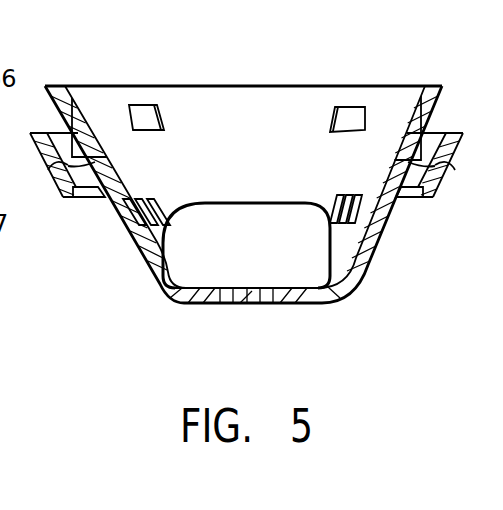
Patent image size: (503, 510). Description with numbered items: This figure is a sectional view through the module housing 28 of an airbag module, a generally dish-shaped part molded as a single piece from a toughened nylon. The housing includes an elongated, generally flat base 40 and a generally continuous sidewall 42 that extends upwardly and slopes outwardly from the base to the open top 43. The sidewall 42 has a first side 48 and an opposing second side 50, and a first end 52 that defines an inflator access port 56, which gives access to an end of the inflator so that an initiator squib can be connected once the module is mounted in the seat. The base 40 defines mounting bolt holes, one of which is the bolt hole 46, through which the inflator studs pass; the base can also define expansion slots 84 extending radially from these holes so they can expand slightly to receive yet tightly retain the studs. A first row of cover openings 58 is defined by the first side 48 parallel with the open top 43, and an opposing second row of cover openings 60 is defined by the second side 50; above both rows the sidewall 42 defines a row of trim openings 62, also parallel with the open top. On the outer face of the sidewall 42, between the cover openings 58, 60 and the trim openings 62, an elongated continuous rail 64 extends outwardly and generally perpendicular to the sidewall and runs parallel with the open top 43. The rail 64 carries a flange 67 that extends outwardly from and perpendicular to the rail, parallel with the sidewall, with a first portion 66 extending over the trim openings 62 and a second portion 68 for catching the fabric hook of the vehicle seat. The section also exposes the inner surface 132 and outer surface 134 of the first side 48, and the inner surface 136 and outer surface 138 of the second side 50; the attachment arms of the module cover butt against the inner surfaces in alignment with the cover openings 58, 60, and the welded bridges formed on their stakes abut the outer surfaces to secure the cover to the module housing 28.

The module housing 28 is at (200, 47).
The open top 43 is at (130, 85).
The sidewall 42 is at (441, 100).
The second side 50 is at (156, 280).
The base 40 is at (312, 305).
The bolt hole 46 is at (256, 305).
The expansion slots 84 is at (225, 305).
The inflator access port 56 is at (236, 205).
The first end 52 is at (257, 174).
The trim openings 62 is at (77, 117).
The inner surface of the first side 132 is at (110, 182).
The inner surface of the second side 136 is at (385, 180).
The first portion of the flange 66 is at (33, 135).
The rail 64 is at (60, 170).
The flange 67 is at (62, 199).
The second portion of the flange 68 is at (74, 200).
The second row of cover openings 60 is at (133, 246).
The outer surface of the first side 134 is at (112, 222).
The first row of cover openings 58 is at (369, 246).
The first side 48 is at (364, 270).
The outer surface of the second side 138 is at (350, 286).